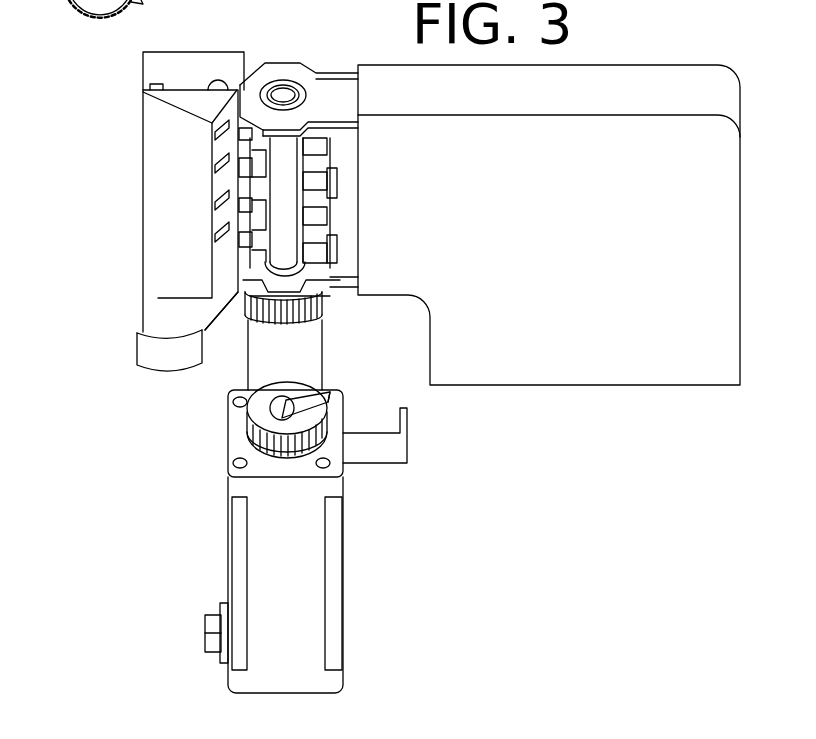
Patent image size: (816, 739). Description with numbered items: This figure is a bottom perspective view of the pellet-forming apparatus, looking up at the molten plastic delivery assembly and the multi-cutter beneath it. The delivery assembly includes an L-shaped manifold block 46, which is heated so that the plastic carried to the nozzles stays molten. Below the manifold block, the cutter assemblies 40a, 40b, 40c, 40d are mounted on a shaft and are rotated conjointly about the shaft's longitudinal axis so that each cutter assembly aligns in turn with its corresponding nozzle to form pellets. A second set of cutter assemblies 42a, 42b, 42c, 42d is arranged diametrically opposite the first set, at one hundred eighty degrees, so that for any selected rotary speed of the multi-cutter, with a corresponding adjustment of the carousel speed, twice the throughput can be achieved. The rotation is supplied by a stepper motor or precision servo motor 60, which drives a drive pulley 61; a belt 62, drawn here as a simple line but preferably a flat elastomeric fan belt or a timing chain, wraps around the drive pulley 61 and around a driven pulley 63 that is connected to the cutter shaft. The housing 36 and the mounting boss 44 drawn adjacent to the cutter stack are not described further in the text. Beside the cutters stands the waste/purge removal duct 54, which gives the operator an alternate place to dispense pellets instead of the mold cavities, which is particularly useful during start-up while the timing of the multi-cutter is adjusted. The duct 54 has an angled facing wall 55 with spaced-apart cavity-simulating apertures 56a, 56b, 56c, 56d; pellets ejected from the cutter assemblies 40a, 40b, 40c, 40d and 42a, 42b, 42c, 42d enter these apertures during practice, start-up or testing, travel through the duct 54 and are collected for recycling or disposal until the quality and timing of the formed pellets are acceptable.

The slider cartridge 36 is at (350, 226).
The cutter assembly 40a is at (322, 240).
The cutter assembly 40b is at (320, 204).
The cutter assembly 40c is at (318, 164).
The cutter assembly 40d is at (316, 130).
The cutter assembly 42a is at (238, 240).
The cutter assembly 42b is at (238, 206).
The cutter assembly 42c is at (238, 168).
The cutter assembly 42d is at (238, 136).
The mounting boss 44 is at (328, 88).
The L-shaped manifold block 46 is at (613, 249).
The waste/purge removal duct 54 is at (130, 318).
The angled facing wall 55 is at (220, 272).
The cavity-simulating aperture 56a is at (221, 236).
The cavity-simulating aperture 56b is at (221, 203).
The cavity-simulating aperture 56c is at (221, 166).
The cavity-simulating aperture 56d is at (221, 134).
The stepper motor or precision servo motor 60 is at (307, 628).
The drive pulley 61 is at (275, 450).
The belt 62 is at (250, 395).
The driven pulley 63 is at (264, 323).